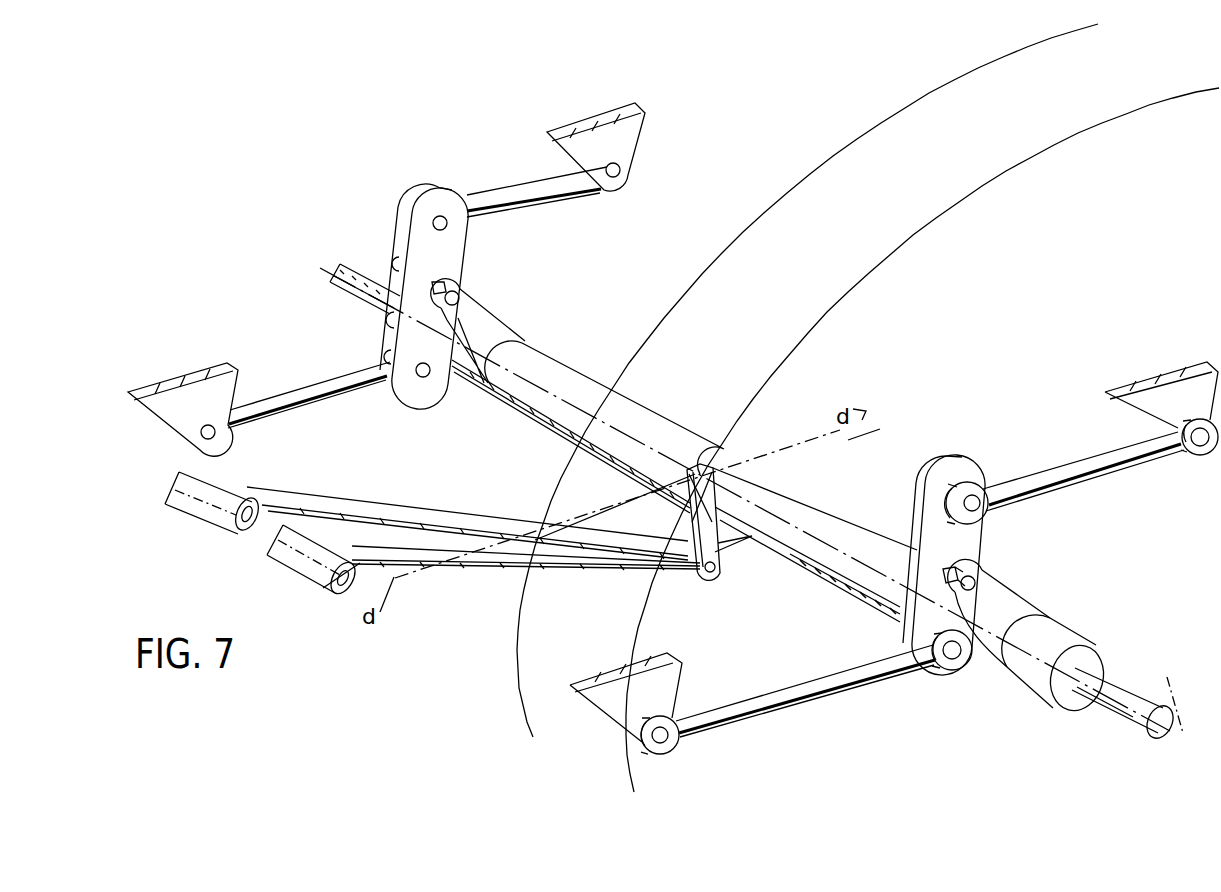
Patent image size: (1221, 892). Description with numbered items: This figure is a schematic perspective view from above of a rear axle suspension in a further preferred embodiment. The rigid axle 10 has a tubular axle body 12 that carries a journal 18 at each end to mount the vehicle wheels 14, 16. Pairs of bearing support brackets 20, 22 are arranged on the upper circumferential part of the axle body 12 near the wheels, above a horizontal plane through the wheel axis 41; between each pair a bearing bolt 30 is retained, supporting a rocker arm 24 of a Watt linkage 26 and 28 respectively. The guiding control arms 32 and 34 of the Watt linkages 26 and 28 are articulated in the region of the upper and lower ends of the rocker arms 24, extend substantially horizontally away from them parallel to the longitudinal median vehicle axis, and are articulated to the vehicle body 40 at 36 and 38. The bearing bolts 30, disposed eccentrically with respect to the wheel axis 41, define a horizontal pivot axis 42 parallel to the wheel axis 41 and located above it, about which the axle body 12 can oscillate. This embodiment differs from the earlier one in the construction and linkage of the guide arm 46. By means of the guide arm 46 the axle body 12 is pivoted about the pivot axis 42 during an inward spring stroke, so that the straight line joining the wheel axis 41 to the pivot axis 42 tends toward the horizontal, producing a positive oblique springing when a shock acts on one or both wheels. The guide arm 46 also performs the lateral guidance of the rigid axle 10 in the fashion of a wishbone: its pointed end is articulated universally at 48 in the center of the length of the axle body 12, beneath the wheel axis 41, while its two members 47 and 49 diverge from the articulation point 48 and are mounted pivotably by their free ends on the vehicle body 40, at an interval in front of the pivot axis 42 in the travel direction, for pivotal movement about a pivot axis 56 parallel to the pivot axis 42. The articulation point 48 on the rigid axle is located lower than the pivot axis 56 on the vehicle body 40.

The rigid axle 10 is at (585, 358).
The tubular axle body 12 is at (640, 412).
The vehicle wheel 14 is at (840, 182).
The vehicle wheel 16 is at (922, 440).
The journal 18 is at (1112, 718).
The bearing support bracket 20 is at (492, 322).
The bearing support bracket 22 is at (918, 518).
The rocker arm 24 is at (398, 217).
The Watt linkage 26 is at (986, 468).
The Watt linkage 28 is at (470, 188).
The bearing bolt 30 is at (455, 290).
The guiding control arm 32 is at (516, 190).
The guiding control arm 34 is at (326, 386).
The articulation point 36 is at (200, 445).
The articulation point 38 is at (613, 177).
The vehicle body 40 is at (580, 128).
The wheel axis 41 is at (1177, 700).
The pivot axis 42 is at (382, 252).
The guide arm 46 is at (582, 574).
The guide arm member 47 is at (478, 570).
The articulation point 48 is at (688, 580).
The guide arm member 49 is at (455, 516).
The pivot axis 56 is at (306, 576).